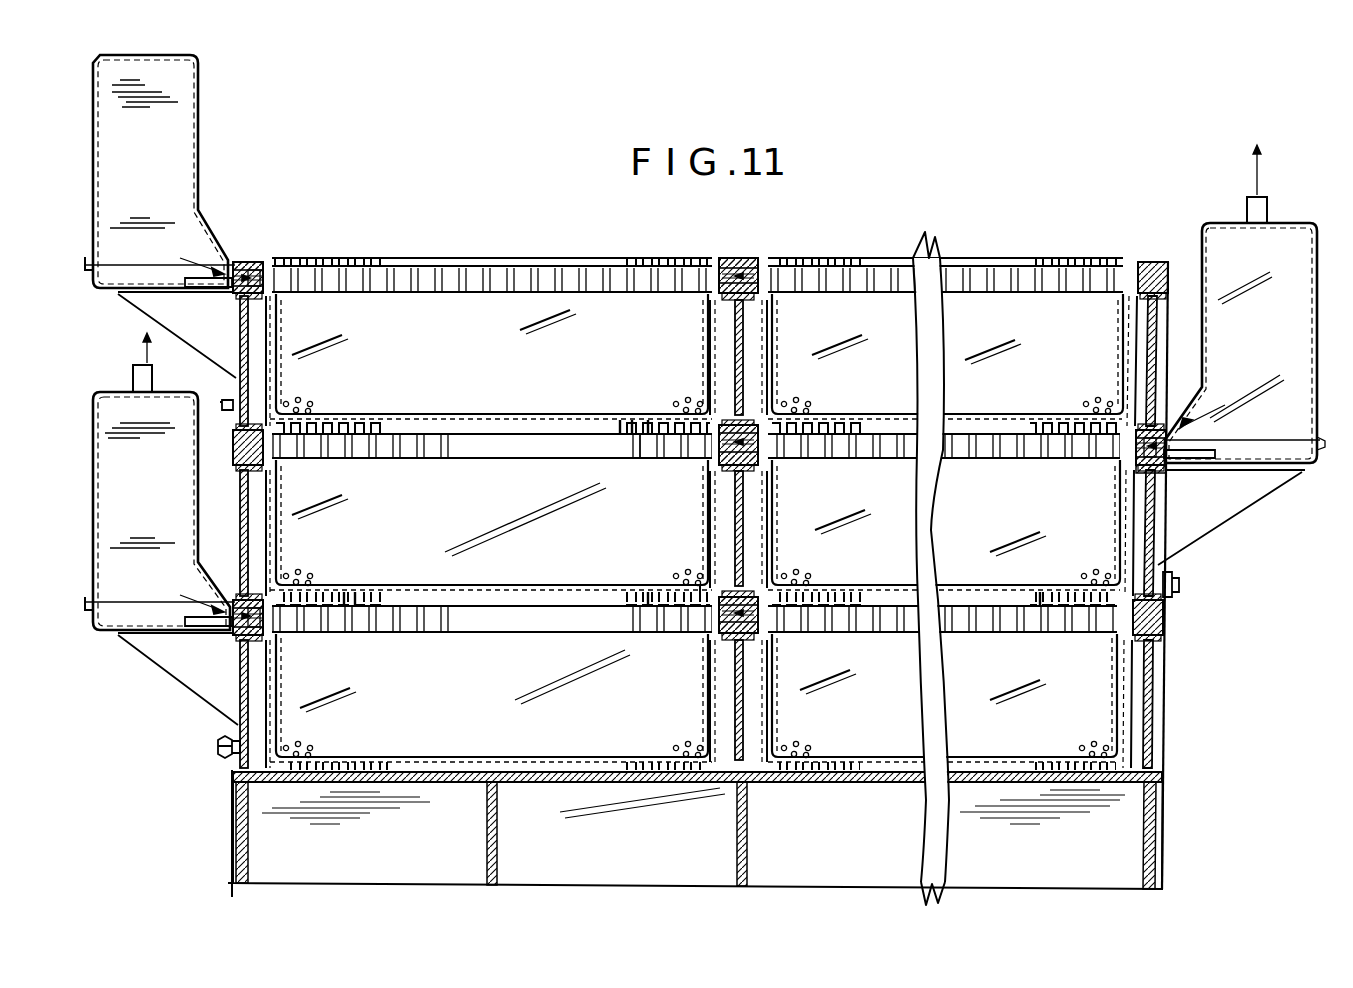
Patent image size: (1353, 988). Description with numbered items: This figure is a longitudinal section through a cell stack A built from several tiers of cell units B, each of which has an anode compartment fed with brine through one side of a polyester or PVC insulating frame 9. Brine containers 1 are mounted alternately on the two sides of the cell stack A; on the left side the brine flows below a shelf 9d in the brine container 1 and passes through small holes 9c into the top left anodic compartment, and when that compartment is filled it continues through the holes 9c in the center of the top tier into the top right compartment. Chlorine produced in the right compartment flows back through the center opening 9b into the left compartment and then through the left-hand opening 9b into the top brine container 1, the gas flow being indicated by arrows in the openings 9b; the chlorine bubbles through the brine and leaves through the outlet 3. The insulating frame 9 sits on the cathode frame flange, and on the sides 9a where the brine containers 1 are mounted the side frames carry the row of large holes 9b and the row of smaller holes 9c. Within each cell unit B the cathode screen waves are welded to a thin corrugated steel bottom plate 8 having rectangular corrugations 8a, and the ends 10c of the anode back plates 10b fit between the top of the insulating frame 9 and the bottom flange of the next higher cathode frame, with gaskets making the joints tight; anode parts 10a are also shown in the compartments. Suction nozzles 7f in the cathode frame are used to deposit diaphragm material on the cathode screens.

The brine container 1 is at (199, 157).
The outlet 3 is at (1250, 210).
The suction nozzle 7f is at (220, 745).
The corrugated steel bottom plate 8 is at (648, 425).
The rectangular corrugations 8a is at (625, 425).
The insulating frame 9 is at (236, 447).
The side 9a is at (1165, 468).
The large hole 9b is at (240, 264).
The small hole 9c is at (760, 292).
The shelf 9d is at (210, 280).
The cell wall 10a is at (810, 462).
The back plate 10b is at (640, 448).
The end 10c is at (702, 592).
The cell stack A is at (514, 254).
The cell unit B is at (1098, 538).